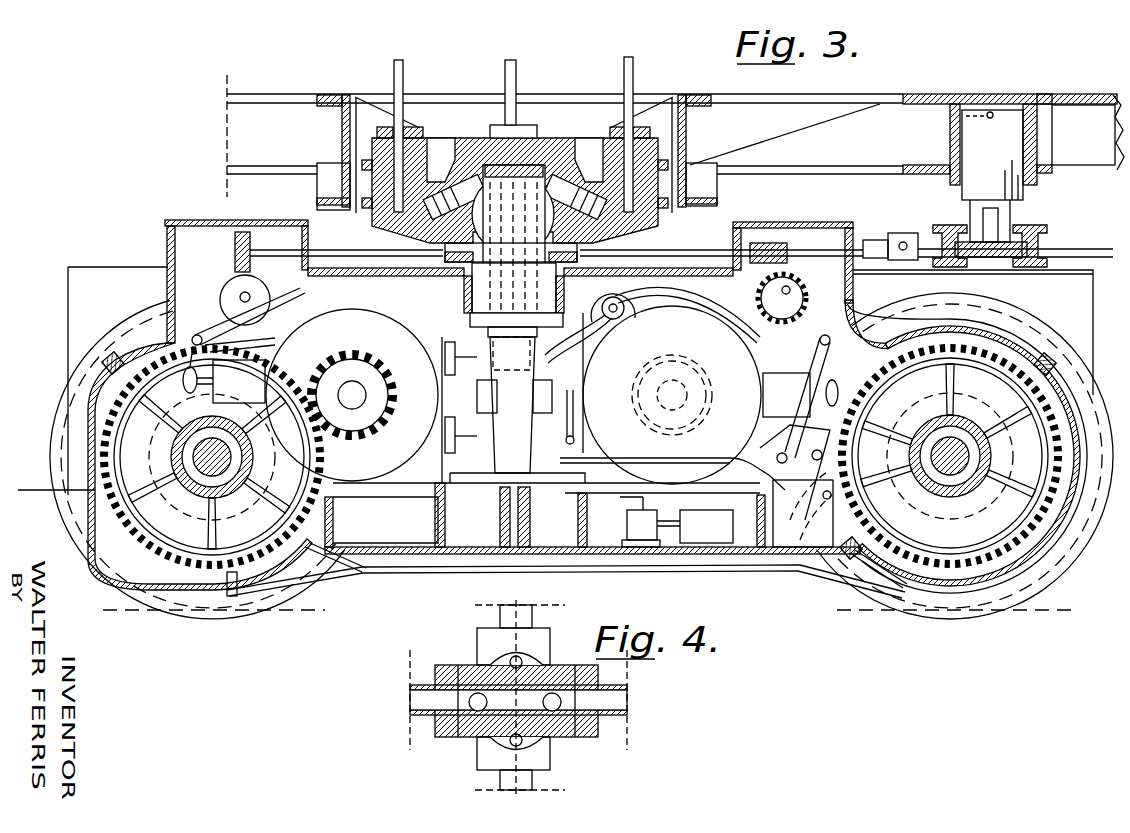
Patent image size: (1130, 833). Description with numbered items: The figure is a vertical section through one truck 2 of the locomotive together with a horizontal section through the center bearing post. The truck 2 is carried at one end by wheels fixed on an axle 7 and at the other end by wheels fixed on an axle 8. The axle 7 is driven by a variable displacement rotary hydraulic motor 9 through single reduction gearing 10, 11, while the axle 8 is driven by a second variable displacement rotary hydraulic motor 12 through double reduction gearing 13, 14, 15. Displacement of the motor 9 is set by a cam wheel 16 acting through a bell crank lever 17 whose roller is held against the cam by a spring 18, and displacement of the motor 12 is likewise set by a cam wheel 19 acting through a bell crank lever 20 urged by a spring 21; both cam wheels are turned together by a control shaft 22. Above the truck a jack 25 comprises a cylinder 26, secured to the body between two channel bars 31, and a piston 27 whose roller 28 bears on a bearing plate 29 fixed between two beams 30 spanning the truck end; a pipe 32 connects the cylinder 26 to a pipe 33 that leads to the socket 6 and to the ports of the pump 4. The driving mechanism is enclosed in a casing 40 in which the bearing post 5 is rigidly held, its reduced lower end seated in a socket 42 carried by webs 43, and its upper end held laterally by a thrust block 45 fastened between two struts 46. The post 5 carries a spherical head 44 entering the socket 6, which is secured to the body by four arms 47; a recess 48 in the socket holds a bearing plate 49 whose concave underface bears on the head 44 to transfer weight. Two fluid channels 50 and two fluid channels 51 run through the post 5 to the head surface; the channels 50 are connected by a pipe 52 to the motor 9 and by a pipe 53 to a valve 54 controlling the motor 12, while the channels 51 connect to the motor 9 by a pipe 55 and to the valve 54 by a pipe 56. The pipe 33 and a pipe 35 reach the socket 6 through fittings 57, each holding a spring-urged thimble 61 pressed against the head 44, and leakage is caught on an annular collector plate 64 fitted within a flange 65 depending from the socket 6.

In FIG. 3, the truck 2 is at (33, 280).
In FIG. 3, the pump 4 is at (424, 406).
In FIG. 3, the bearing post 5 is at (517, 398).
In FIG. 3, the socket 6 is at (282, 85).
In FIG. 3, the axle 7 is at (195, 457).
In FIG. 3, the axle 8 is at (965, 457).
In FIG. 3, the variable displacement rotary hydraulic motor 9 is at (352, 395).
In FIG. 3, the reduction gearing 10 is at (378, 440).
In FIG. 3, the reduction gearing 11 is at (320, 457).
In FIG. 3, the variable displacement rotary hydraulic motor 12 is at (672, 395).
In FIG. 3, the reduction gearing 13 is at (653, 438).
In FIG. 3, the reduction gearing 14 is at (830, 538).
In FIG. 3, the reduction gearing 15 is at (935, 552).
In FIG. 3, the cam wheel 16 is at (220, 300).
In FIG. 3, the bell crank lever 17 is at (215, 332).
In FIG. 3, the spring 18 is at (240, 369).
In FIG. 3, the cam wheel 19 is at (800, 314).
In FIG. 3, the bell crank lever 20 is at (830, 355).
In FIG. 3, the spring 21 is at (760, 352).
In FIG. 3, the control shaft 22 is at (362, 250).
In FIG. 3, the jack 25 is at (1068, 112).
In FIG. 3, the cylinder 26 is at (950, 180).
In FIG. 3, the piston 27 is at (993, 152).
In FIG. 3, the roller 28 is at (985, 220).
In FIG. 3, the bearing plate 29 is at (1015, 235).
In FIG. 3, the beams 30 is at (935, 235).
In FIG. 3, the channel bars 31 is at (948, 142).
In FIG. 3, the pipe 32 is at (862, 108).
In FIG. 3, the pipe 33 is at (516, 68).
In FIG. 3, the pipe 35 is at (398, 67).
In FIG. 3, the casing 40 is at (405, 574).
In FIG. 3, the socket 42 is at (495, 522).
In FIG. 3, the webs 43 is at (530, 522).
In FIG. 3, the spherical head 44 is at (470, 140).
In FIG. 3, the thrust block 45 is at (473, 300).
In FIG. 3, the struts 46 is at (460, 278).
In FIG. 3, the arms 47 is at (367, 120).
In FIG. 3, the recess 48 is at (548, 152).
In FIG. 3, the bearing plate 49 is at (500, 120).
In FIG. 4, the fluid channels 50 is at (490, 660).
In FIG. 3, the fluid channels 51 is at (436, 320).
In FIG. 4, the fluid channels 51 is at (473, 740).
In FIG. 3, the pipe 52 is at (476, 345).
In FIG. 3, the pipe 53 is at (635, 322).
In FIG. 3, the valve 54 is at (620, 316).
In FIG. 3, the pipe 55 is at (468, 445).
In FIG. 3, the pipe 56 is at (578, 372).
In FIG. 3, the fitting 57 is at (650, 218).
In FIG. 3, the thimble 61 is at (515, 196).
In FIG. 3, the collector plate 64 is at (588, 255).
In FIG. 3, the flange 65 is at (432, 240).